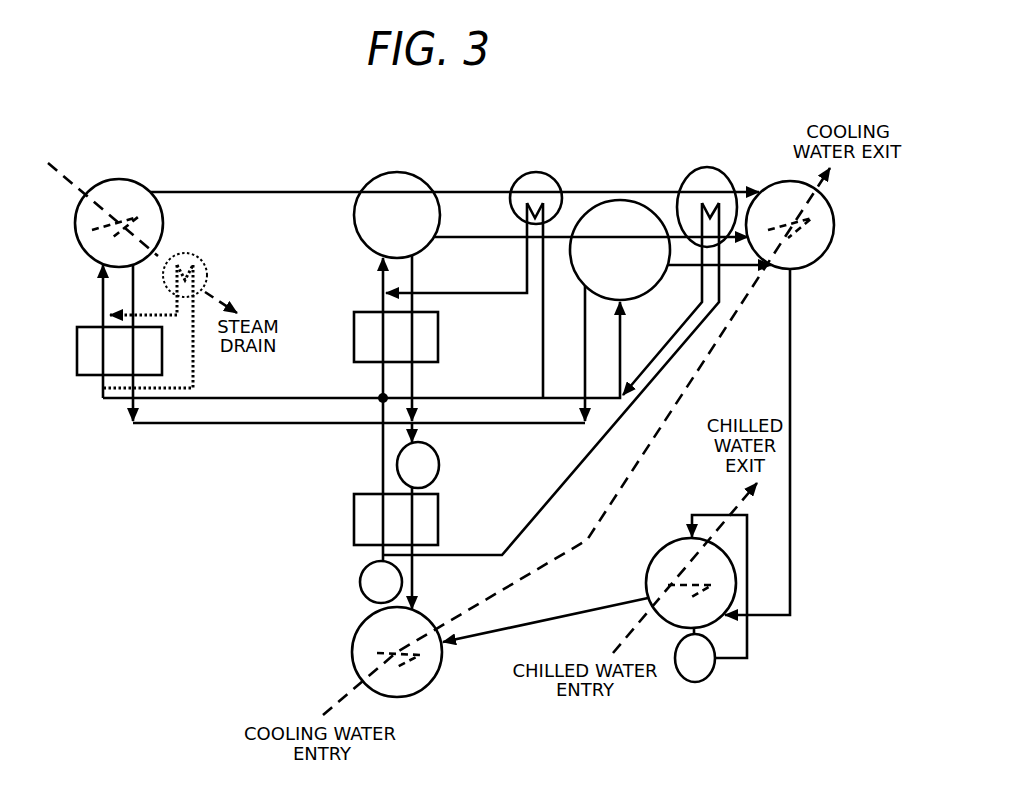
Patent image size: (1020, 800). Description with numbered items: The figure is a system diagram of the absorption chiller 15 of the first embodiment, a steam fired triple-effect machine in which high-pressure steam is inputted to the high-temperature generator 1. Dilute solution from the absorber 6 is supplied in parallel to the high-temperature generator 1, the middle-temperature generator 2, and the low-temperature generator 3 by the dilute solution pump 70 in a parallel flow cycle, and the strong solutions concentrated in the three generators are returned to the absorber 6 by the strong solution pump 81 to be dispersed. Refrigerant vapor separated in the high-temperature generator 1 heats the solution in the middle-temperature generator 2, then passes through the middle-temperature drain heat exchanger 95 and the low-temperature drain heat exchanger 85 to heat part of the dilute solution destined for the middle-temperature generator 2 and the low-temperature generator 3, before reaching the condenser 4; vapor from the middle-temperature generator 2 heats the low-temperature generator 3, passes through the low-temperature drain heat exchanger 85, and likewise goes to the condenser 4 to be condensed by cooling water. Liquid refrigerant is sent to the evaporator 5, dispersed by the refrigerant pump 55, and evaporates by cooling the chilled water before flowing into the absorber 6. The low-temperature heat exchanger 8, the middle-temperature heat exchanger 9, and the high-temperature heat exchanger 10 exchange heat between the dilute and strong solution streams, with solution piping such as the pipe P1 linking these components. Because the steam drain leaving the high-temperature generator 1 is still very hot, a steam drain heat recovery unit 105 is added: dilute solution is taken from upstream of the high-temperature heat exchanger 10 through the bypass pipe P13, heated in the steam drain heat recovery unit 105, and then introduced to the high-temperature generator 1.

The high-temperature generator 1 is at (140, 182).
The middle-temperature generator 2 is at (405, 175).
The low-temperature generator 3 is at (636, 200).
The condenser 4 is at (820, 252).
The evaporator 5 is at (666, 546).
The absorber 6 is at (352, 650).
The low-temperature heat exchanger 8 is at (352, 520).
The middle-temperature heat exchanger 9 is at (442, 336).
The high-temperature heat exchanger 10 is at (77, 350).
The absorption chiller 15 is at (192, 547).
The refrigerant pump 55 is at (700, 682).
The dilute solution pump 70 is at (358, 582).
The strong solution pump 81 is at (442, 462).
The low-temperature drain heat exchanger 85 is at (712, 170).
The middle-temperature drain heat exchanger 95 is at (548, 176).
The steam drain heat recovery unit 105 is at (206, 262).
The solution pipe P1 is at (381, 460).
The bypass pipe P13 is at (196, 375).